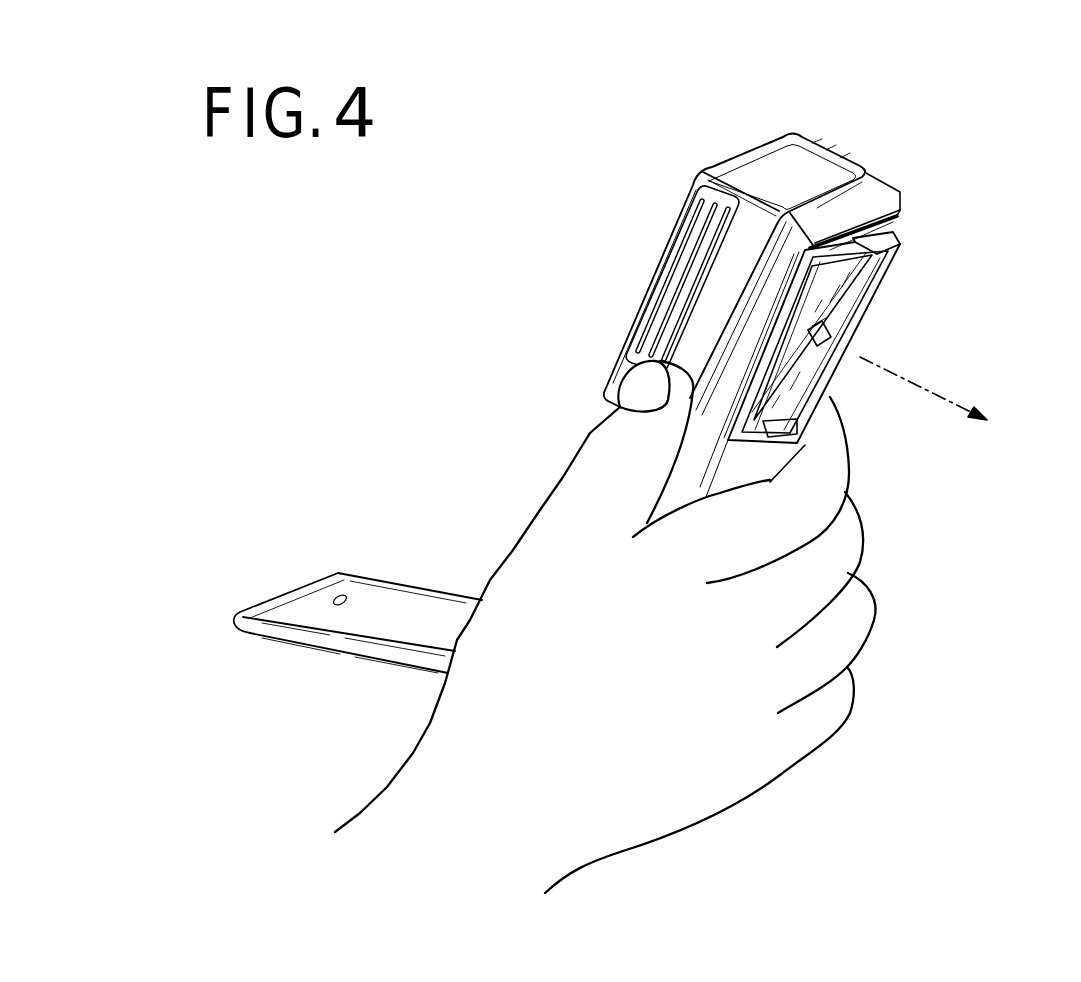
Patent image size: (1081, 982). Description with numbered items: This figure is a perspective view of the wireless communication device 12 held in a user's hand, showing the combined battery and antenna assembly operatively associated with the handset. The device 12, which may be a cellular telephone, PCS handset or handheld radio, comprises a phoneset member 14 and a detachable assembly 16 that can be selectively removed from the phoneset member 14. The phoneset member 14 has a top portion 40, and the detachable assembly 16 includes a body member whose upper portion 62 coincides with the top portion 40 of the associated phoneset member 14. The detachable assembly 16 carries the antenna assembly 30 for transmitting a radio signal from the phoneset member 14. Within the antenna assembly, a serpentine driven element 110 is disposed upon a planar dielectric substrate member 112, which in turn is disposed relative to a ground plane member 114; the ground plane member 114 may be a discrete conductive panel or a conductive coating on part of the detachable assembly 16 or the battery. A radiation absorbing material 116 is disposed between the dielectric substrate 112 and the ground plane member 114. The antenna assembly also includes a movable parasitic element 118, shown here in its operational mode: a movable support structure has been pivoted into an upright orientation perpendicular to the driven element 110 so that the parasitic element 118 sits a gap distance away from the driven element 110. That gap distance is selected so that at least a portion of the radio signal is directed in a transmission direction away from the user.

The wireless communication device 12 is at (598, 274).
The phoneset member 14 is at (758, 147).
The detachable assembly 16 is at (770, 480).
The antenna assembly 30 is at (928, 281).
The top portion 40 is at (797, 163).
The upper portion 62 is at (852, 197).
The driven element 110 is at (793, 363).
The planar dielectric substrate member 112 is at (882, 218).
The ground plane member 114 is at (900, 191).
The radiation absorbing material 116 is at (900, 212).
The parasitic element 118 is at (873, 290).